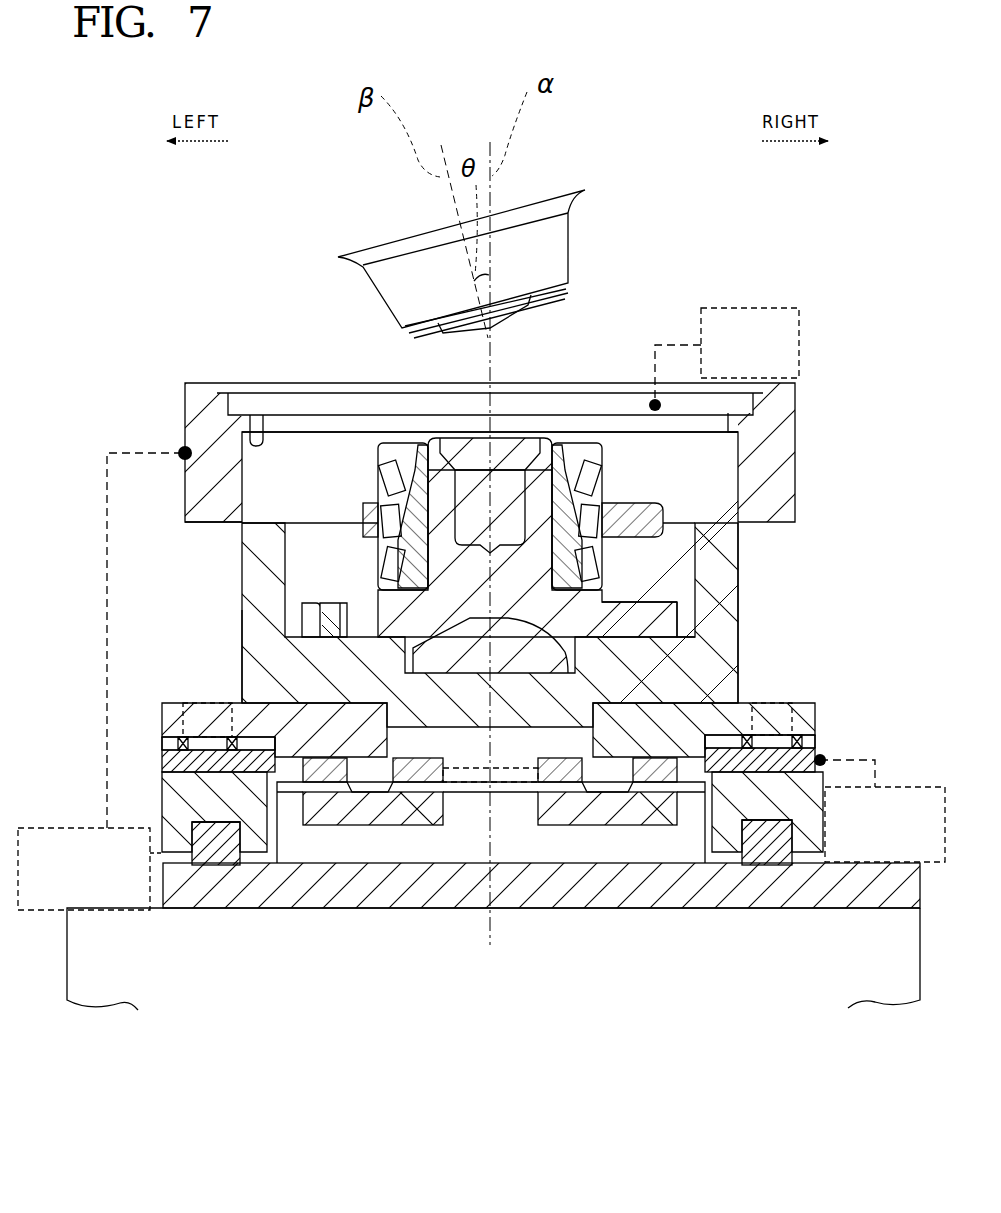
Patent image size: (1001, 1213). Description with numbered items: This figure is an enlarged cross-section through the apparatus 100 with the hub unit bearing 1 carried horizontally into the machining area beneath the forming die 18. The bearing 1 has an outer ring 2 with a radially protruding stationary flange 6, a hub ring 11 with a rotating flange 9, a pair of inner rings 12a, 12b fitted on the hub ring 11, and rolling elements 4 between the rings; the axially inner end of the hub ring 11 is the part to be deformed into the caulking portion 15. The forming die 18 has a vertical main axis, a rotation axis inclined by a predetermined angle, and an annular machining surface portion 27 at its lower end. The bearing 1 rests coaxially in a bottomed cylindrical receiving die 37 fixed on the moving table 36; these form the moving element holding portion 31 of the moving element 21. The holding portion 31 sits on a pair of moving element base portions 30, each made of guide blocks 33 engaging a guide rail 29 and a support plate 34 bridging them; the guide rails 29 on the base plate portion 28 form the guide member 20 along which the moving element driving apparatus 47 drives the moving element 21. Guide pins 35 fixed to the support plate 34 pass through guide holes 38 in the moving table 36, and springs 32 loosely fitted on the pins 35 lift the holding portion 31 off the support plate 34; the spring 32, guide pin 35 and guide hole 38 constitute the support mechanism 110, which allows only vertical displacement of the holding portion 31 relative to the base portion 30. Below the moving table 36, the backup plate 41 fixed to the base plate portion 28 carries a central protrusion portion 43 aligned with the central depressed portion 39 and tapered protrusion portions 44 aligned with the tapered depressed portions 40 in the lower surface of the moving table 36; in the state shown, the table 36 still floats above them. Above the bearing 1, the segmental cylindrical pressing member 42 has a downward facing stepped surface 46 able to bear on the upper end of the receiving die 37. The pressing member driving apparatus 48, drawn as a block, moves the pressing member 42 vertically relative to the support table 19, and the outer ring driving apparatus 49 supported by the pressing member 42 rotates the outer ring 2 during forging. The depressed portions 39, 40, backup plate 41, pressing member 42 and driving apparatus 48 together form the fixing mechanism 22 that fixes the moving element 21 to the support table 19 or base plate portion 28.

The hub unit bearing 1 is at (582, 432).
The outer ring 2 is at (600, 492).
The rolling elements 4 is at (405, 508).
The stationary flange 6 is at (664, 512).
The rotating flange 9 is at (739, 552).
The hub ring 11 is at (545, 628).
The inner ring 12a is at (397, 450).
The inner ring 12b is at (395, 588).
The caulking portion 15 is at (557, 432).
The forming die 18 is at (533, 253).
The support table 19 is at (118, 945).
The guide member 20 is at (691, 912).
The moving element 21 is at (240, 582).
The fixing mechanism 22 is at (205, 383).
The annular machining surface portion 27 is at (538, 302).
The base plate portion 28 is at (312, 880).
The guide rail 29 is at (192, 823).
The moving element base portion 30 is at (222, 825).
The moving element holding portion 31 is at (240, 645).
The spring 32 is at (165, 735).
The guide block 33 is at (195, 800).
The support plate 34 is at (175, 757).
The guide pin 35 is at (205, 720).
The moving table 36 is at (672, 612).
The receiving die 37 is at (703, 615).
The guide hole 38 is at (190, 705).
The central depressed portion 39 is at (470, 783).
The tapered depressed portion 40 is at (345, 827).
The backup plate 41 is at (548, 826).
The pressing member 42 is at (198, 440).
The central protrusion portion 43 is at (512, 793).
The tapered protrusion portion 44 is at (385, 783).
The stepped surface 46 is at (256, 430).
The moving element driving apparatus 47 is at (890, 787).
The pressing member driving apparatus 48 is at (90, 828).
The outer ring driving apparatus 49 is at (745, 308).
The bearing assembly apparatus 100 is at (815, 1052).
The support mechanism 110 is at (855, 640).